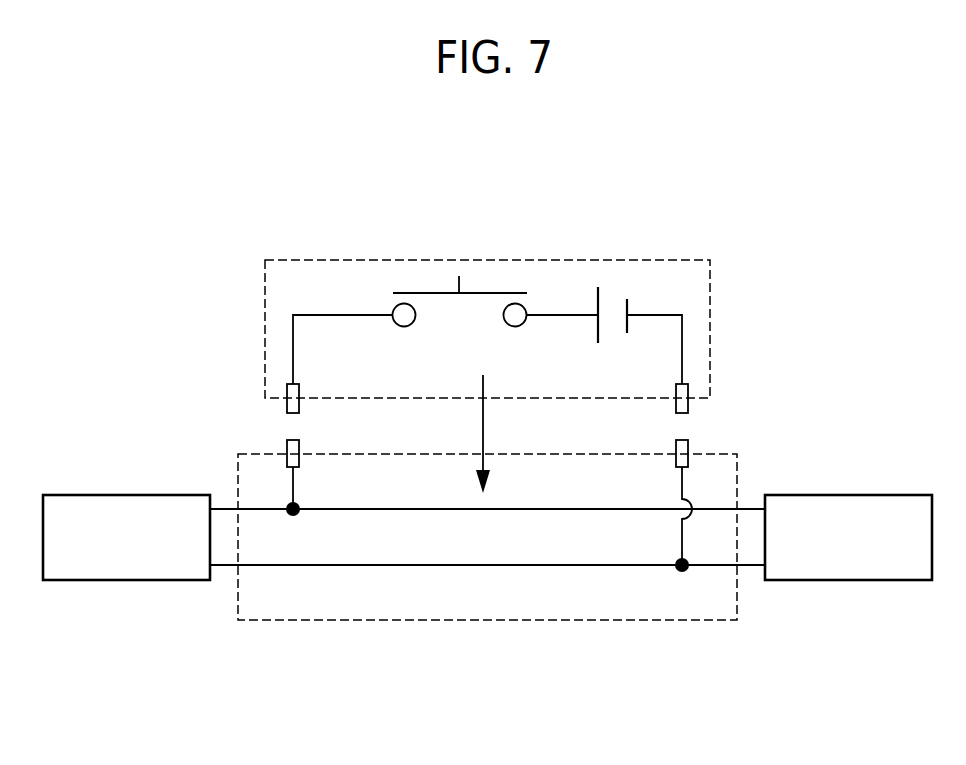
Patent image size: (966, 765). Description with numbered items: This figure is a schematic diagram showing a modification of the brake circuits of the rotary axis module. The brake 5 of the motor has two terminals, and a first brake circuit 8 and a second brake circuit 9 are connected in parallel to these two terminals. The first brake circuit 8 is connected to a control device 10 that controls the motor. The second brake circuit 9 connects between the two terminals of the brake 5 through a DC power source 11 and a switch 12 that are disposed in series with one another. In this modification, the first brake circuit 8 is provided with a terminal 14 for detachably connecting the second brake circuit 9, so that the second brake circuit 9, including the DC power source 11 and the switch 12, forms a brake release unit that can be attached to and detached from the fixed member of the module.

The brake 5 is at (125, 494).
The first brake circuit 8 is at (473, 644).
The second brake circuit 9 is at (372, 242).
The control device 10 is at (845, 494).
The DC power source 11 is at (619, 272).
The switch 12 is at (482, 272).
The terminal 14 is at (286, 442).